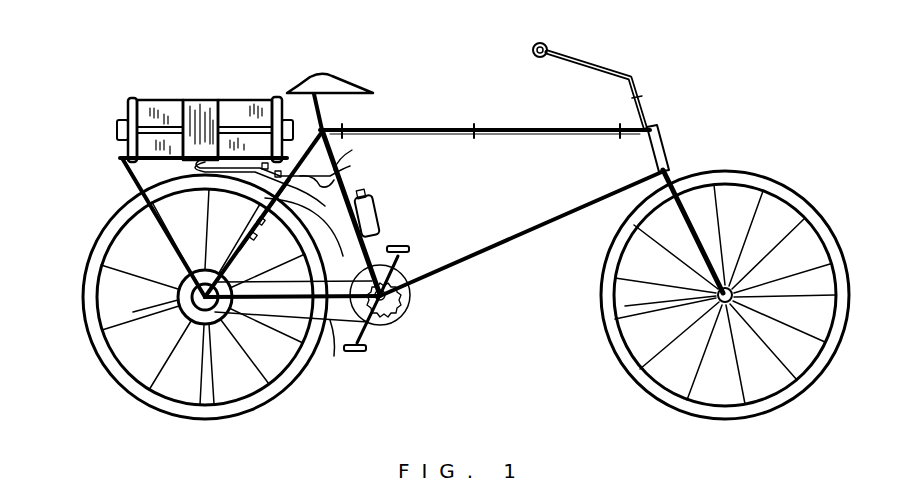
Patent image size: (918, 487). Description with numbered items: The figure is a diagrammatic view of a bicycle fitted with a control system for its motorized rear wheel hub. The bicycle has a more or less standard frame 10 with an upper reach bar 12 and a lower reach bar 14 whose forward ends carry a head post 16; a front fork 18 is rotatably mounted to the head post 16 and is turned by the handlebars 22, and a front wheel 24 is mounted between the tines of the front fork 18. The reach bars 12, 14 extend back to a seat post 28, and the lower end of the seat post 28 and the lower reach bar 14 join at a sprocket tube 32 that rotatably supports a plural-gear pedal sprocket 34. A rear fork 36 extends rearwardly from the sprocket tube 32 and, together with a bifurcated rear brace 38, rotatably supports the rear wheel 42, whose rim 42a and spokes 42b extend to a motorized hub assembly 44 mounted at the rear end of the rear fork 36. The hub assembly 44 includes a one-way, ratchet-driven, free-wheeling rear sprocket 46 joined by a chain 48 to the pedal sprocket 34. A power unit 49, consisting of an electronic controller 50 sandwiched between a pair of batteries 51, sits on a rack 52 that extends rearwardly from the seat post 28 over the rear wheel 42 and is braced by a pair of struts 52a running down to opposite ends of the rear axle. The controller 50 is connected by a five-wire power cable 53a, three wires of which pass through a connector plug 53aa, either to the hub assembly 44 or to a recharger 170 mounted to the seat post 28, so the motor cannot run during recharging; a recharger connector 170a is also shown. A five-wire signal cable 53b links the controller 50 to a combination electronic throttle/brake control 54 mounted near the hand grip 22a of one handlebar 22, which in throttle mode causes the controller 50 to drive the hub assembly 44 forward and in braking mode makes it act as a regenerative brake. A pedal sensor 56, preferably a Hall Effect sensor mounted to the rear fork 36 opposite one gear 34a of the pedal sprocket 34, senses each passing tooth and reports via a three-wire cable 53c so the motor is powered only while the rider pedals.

The frame 10 is at (435, 106).
The upper reach bar 12 is at (536, 128).
The lower reach bar 14 is at (501, 218).
The head post 16 is at (670, 148).
The front fork 18 is at (669, 248).
The handlebars 22 is at (602, 64).
The hand grip 22a is at (530, 50).
The front wheel 24 is at (738, 166).
The seat post 28 is at (354, 169).
The sprocket tube 32 is at (416, 319).
The plural-gear pedal sprocket 34 is at (390, 322).
The gear 34a is at (428, 298).
The rear fork 36 is at (266, 308).
The bifurcated rear brace 38 is at (302, 180).
The rear wheel 42 is at (78, 332).
The rim 42a is at (106, 368).
The spokes 42b is at (174, 338).
The motorized hub assembly 44 is at (182, 272).
The rear sprocket 46 is at (210, 326).
The chain 48 is at (274, 268).
The power unit 49 is at (100, 126).
The electronic controller 50 is at (210, 98).
The batteries 51 is at (172, 104).
The rack 52 is at (324, 127).
The struts 52a is at (122, 179).
The electrical power cable 53a is at (237, 238).
The connector plug 53aa is at (240, 224).
The signal cable 53b is at (346, 153).
The electrical cable 53c is at (302, 226).
The throttle/brake control 54 is at (540, 42).
The pedal sensor 56 is at (293, 336).
The recharger 170 is at (378, 222).
The controller connector 170a is at (378, 202).